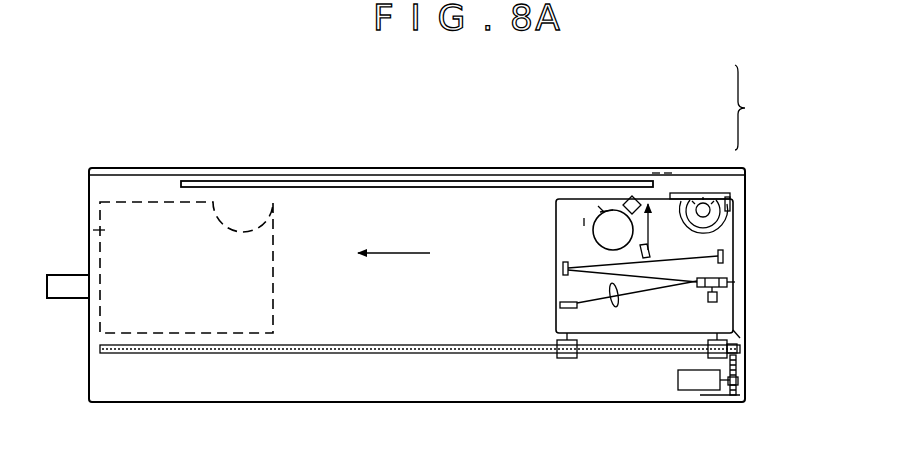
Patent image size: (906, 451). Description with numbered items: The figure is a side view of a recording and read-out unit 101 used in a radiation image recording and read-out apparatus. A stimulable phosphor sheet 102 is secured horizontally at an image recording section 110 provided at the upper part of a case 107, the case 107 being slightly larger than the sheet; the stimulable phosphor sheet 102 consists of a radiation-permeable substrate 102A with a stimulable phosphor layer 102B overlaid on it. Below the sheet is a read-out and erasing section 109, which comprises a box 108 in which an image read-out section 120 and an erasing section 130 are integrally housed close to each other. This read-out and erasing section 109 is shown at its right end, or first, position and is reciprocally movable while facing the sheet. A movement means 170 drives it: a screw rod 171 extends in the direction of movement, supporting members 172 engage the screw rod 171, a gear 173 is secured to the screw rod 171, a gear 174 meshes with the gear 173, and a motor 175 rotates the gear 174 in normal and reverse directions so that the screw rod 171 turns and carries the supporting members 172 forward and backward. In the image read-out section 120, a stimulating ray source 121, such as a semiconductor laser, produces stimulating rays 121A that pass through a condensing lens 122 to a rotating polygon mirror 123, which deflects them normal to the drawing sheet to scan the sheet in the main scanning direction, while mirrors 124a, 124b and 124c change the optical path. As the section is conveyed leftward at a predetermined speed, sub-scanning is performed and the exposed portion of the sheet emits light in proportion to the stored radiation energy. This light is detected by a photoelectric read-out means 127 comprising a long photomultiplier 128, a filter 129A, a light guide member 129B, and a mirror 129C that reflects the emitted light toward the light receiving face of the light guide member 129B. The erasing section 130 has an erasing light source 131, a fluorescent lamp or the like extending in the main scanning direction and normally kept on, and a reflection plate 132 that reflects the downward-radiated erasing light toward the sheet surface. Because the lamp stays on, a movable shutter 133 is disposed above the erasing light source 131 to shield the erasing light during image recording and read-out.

The recording and read-out unit 101 is at (354, 128).
The stimulable phosphor sheet 102 is at (769, 107).
The radiation-permeable substrate 102A is at (656, 172).
The stimulable phosphor layer 102B is at (668, 172).
The case 107 is at (735, 318).
The box 108 is at (738, 338).
The read-out and erasing section 109 is at (97, 230).
The image recording section 110 is at (179, 182).
The image read-out section 120 is at (566, 234).
The stimulating ray source 121 is at (560, 305).
The stimulating rays 121A is at (673, 287).
The condensing lens 122 is at (617, 302).
The rotating polygon mirror 123 is at (730, 282).
The mirror 124a is at (563, 268).
The mirror 124b is at (723, 250).
The mirror 124c is at (638, 250).
The photoelectric read-out means 127 is at (583, 222).
The long photomultiplier 128 is at (600, 209).
The filter 129A is at (613, 209).
The light guide member 129B is at (630, 198).
The mirror 129C is at (720, 268).
The erasing section 130 is at (728, 232).
The erasing light source 131 is at (728, 208).
The reflection plate 132 is at (733, 196).
The movable shutter 133 is at (698, 192).
The movement means 170 is at (616, 374).
The screw rod 171 is at (510, 360).
The supporting members 172 is at (575, 360).
The gear 173 is at (738, 357).
The gear 174 is at (738, 392).
The motor 175 is at (716, 403).